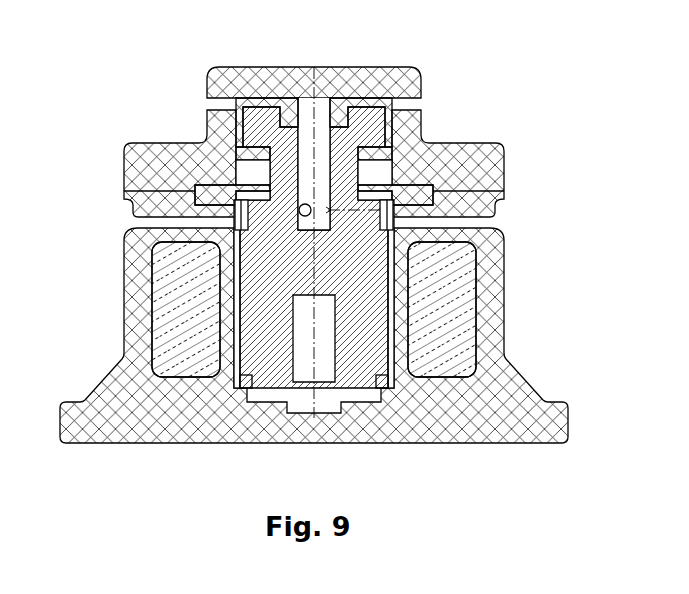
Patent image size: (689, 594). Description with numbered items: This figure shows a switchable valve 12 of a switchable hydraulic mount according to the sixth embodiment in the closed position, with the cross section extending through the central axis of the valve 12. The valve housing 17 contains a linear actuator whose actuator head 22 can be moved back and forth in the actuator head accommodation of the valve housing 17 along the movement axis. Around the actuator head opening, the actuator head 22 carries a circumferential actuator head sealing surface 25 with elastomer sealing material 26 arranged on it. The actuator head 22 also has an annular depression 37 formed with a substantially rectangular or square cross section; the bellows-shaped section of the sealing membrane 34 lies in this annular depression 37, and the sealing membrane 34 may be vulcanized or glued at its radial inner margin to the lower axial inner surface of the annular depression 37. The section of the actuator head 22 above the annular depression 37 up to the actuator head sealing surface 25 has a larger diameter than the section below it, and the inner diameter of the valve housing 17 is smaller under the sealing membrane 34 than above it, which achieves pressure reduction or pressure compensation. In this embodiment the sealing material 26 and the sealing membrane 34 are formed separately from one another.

The switchable valve 12 is at (108, 86).
The valve housing 17 is at (472, 200).
The actuator head 22 is at (347, 292).
The actuator head sealing surface 25 is at (367, 98).
The elastomer sealing material 26 is at (258, 98).
The sealing membrane 34 is at (397, 185).
The annular depression 37 is at (370, 170).